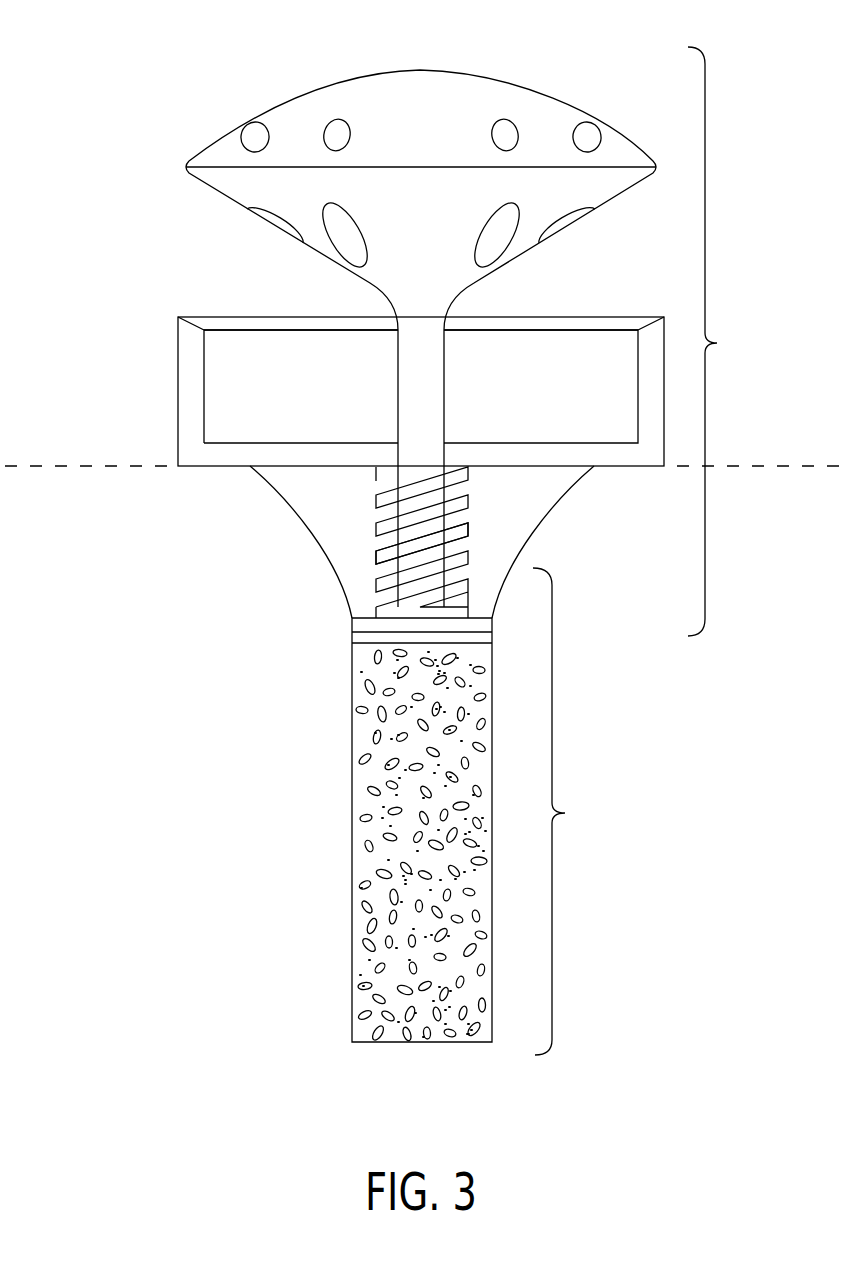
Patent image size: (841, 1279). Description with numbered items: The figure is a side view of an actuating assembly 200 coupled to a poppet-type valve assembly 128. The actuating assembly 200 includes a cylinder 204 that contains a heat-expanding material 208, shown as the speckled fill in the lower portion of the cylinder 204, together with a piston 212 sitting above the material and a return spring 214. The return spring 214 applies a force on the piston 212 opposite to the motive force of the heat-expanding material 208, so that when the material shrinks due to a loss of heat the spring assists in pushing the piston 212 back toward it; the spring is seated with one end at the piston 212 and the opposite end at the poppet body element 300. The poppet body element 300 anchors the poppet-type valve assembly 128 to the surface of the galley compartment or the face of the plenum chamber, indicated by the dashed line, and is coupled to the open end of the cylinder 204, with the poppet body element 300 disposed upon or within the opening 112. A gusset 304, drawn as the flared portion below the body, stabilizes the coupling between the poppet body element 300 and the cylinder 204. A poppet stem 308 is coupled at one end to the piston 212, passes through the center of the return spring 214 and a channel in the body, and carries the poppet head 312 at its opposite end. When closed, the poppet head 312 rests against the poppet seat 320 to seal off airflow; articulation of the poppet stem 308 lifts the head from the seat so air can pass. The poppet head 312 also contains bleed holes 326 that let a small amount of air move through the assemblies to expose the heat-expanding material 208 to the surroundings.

The poppet head 312 is at (347, 87).
The bleed holes 326 is at (587, 123).
The poppet stem 308 is at (417, 400).
The poppet seat 320 is at (544, 320).
The poppet body element 300 is at (191, 383).
The poppet-type valve assembly 128 is at (721, 341).
The opening 112 is at (390, 473).
The gusset 304 is at (324, 525).
The return spring 214 is at (385, 530).
The piston 212 is at (368, 632).
The heat-expanding material 208 is at (368, 822).
The cylinder 204 is at (352, 928).
The actuating assembly 200 is at (570, 811).